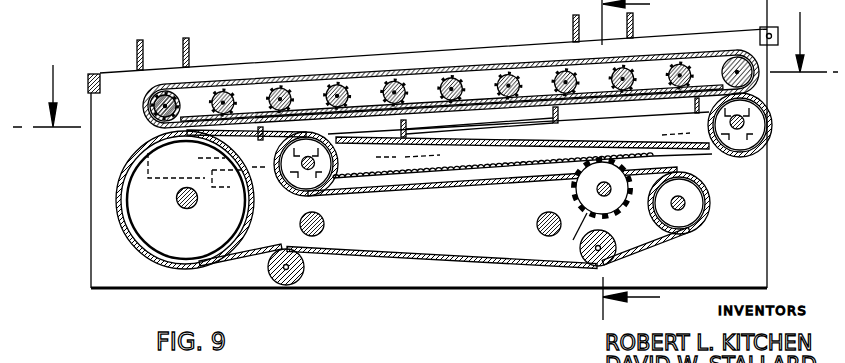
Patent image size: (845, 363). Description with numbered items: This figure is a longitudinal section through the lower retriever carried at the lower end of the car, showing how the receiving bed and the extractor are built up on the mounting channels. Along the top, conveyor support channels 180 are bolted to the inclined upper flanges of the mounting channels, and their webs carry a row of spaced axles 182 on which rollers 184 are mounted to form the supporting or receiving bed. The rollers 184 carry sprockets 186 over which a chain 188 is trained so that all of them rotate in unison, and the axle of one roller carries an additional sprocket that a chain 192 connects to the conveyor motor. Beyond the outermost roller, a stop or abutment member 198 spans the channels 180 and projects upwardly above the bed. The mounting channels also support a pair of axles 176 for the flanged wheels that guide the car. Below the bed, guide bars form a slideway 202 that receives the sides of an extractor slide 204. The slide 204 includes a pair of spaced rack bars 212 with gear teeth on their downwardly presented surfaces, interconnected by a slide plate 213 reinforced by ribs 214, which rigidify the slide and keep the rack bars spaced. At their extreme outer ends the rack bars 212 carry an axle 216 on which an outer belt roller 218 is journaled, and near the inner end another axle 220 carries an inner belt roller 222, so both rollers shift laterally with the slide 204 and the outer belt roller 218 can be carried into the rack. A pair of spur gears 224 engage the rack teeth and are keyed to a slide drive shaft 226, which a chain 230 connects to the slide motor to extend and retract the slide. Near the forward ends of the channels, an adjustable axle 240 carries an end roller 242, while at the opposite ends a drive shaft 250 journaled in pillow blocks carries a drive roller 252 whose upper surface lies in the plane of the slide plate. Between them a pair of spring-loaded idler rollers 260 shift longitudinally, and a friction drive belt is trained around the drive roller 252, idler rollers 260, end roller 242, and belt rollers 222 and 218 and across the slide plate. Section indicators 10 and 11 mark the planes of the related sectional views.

The section line 10- 10 is at (425, 63).
The section line 11- 11 is at (644, 160).
The axles 176 is at (325, 227).
The conveyor support channels 180 is at (107, 112).
The axles 182 is at (291, 105).
The rollers 184 is at (262, 92).
The sprockets 186 is at (297, 77).
The chain 188 is at (420, 70).
The chain 192 is at (149, 42).
The stop or abutment member 198 is at (93, 73).
The slideway 202 is at (419, 160).
The extractor slide 204 is at (440, 152).
The rack bars 212 is at (485, 172).
The slide plate 213 is at (483, 117).
The ribs 214 is at (545, 117).
The axle 216 is at (748, 123).
The outer belt roller 218 is at (768, 145).
The axle 220 is at (304, 170).
The inner belt roller 222 is at (330, 190).
The spur gears 224 is at (560, 237).
The slide drive shaft 226 is at (597, 189).
The chain 230 is at (634, 23).
The axle 240 is at (684, 211).
The end roller 242 is at (700, 206).
The drive shaft 250 is at (184, 209).
The drive roller 252 is at (152, 258).
The spring-loaded idler rollers 260 is at (290, 286).